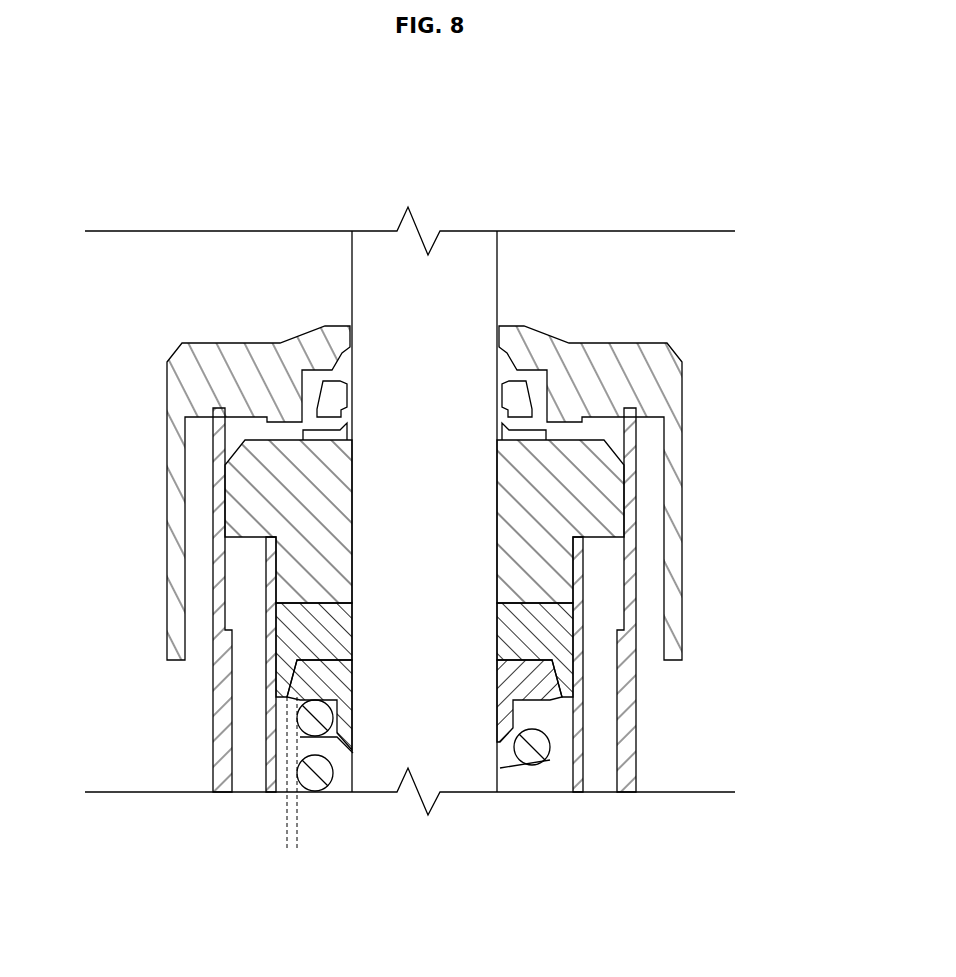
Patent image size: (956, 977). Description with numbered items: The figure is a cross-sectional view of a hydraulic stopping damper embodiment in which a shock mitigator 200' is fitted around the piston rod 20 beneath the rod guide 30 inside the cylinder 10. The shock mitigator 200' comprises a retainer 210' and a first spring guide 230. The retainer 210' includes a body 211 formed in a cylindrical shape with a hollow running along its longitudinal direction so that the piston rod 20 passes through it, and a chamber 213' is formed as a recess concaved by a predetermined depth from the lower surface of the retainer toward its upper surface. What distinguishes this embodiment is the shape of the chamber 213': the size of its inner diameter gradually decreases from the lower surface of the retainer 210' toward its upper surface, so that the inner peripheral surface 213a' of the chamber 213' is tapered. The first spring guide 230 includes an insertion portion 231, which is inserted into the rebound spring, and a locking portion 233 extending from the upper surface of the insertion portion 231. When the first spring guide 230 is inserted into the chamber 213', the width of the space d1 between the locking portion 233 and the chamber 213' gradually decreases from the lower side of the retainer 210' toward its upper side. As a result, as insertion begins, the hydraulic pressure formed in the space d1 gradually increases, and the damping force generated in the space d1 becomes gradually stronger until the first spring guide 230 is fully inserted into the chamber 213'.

The piston rod 20 is at (468, 250).
The rod guide 30 is at (617, 490).
The cylinder 10 is at (620, 763).
The retainer 210' is at (498, 616).
The body 211 is at (290, 633).
The chamber 213' is at (333, 753).
The space d1 is at (318, 830).
The inner peripheral surface 213a' is at (640, 701).
The insertion portion 231 is at (503, 720).
The locking portion 233 is at (522, 690).
The shock mitigator 200' is at (607, 778).
The first spring guide 230 is at (577, 878).